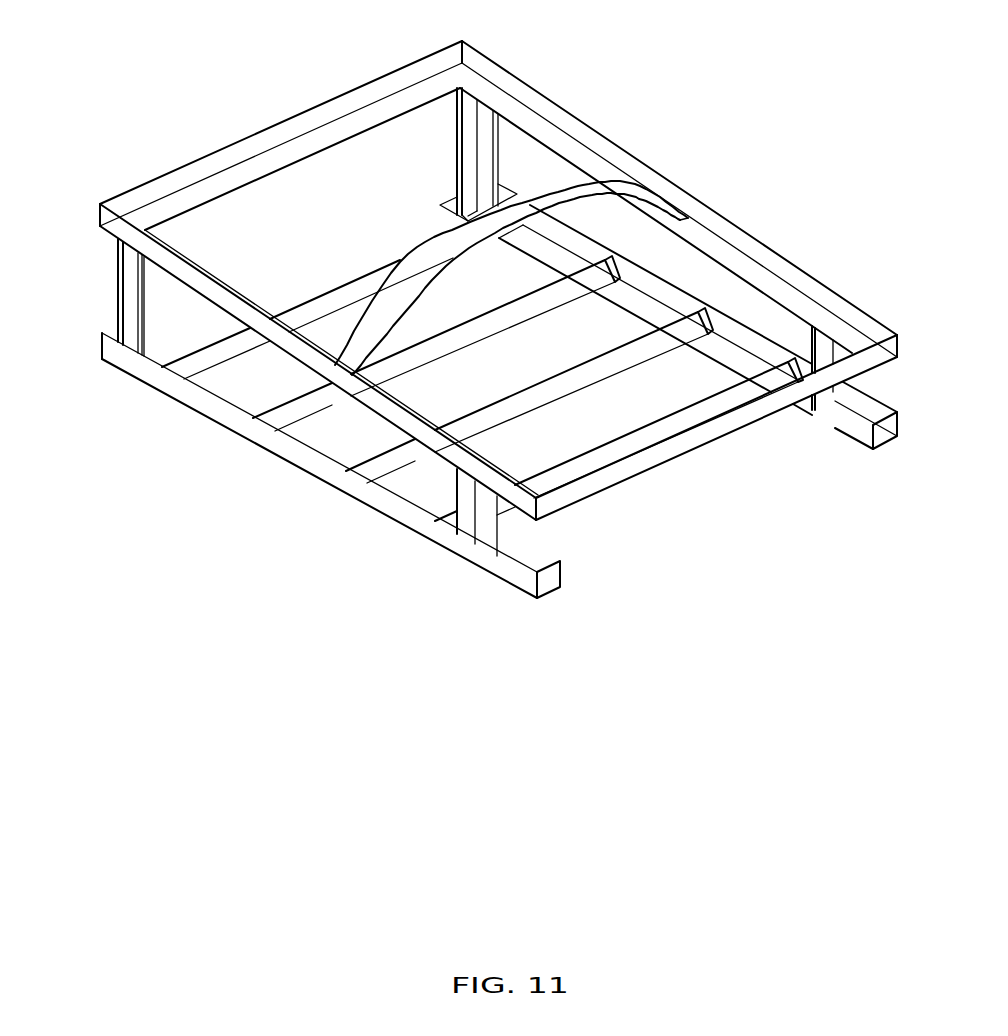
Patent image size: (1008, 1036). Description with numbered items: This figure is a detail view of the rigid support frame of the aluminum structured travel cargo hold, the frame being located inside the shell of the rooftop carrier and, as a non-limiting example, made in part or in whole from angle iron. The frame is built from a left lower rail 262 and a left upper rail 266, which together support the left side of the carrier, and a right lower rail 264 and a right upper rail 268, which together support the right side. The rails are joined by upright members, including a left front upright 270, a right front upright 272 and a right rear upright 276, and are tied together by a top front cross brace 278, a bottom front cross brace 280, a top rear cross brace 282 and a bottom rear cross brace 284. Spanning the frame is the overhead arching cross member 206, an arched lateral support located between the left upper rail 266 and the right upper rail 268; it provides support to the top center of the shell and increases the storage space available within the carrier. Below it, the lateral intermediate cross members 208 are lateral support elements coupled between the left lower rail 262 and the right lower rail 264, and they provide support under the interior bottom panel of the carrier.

The overhead arching cross member 206 is at (603, 188).
The lateral intermediate cross members 208 is at (383, 460).
The left lower rail 262 is at (398, 510).
The right lower rail 264 is at (740, 333).
The left upper rail 266 is at (215, 290).
The right upper rail 268 is at (709, 217).
The left front upright 270 is at (123, 277).
The right front upright 272 is at (485, 133).
The right rear upright 276 is at (825, 407).
The top front cross brace 278 is at (308, 108).
The bottom front cross brace 280 is at (210, 365).
The top rear cross brace 282 is at (735, 423).
The bottom rear cross brace 284 is at (513, 511).